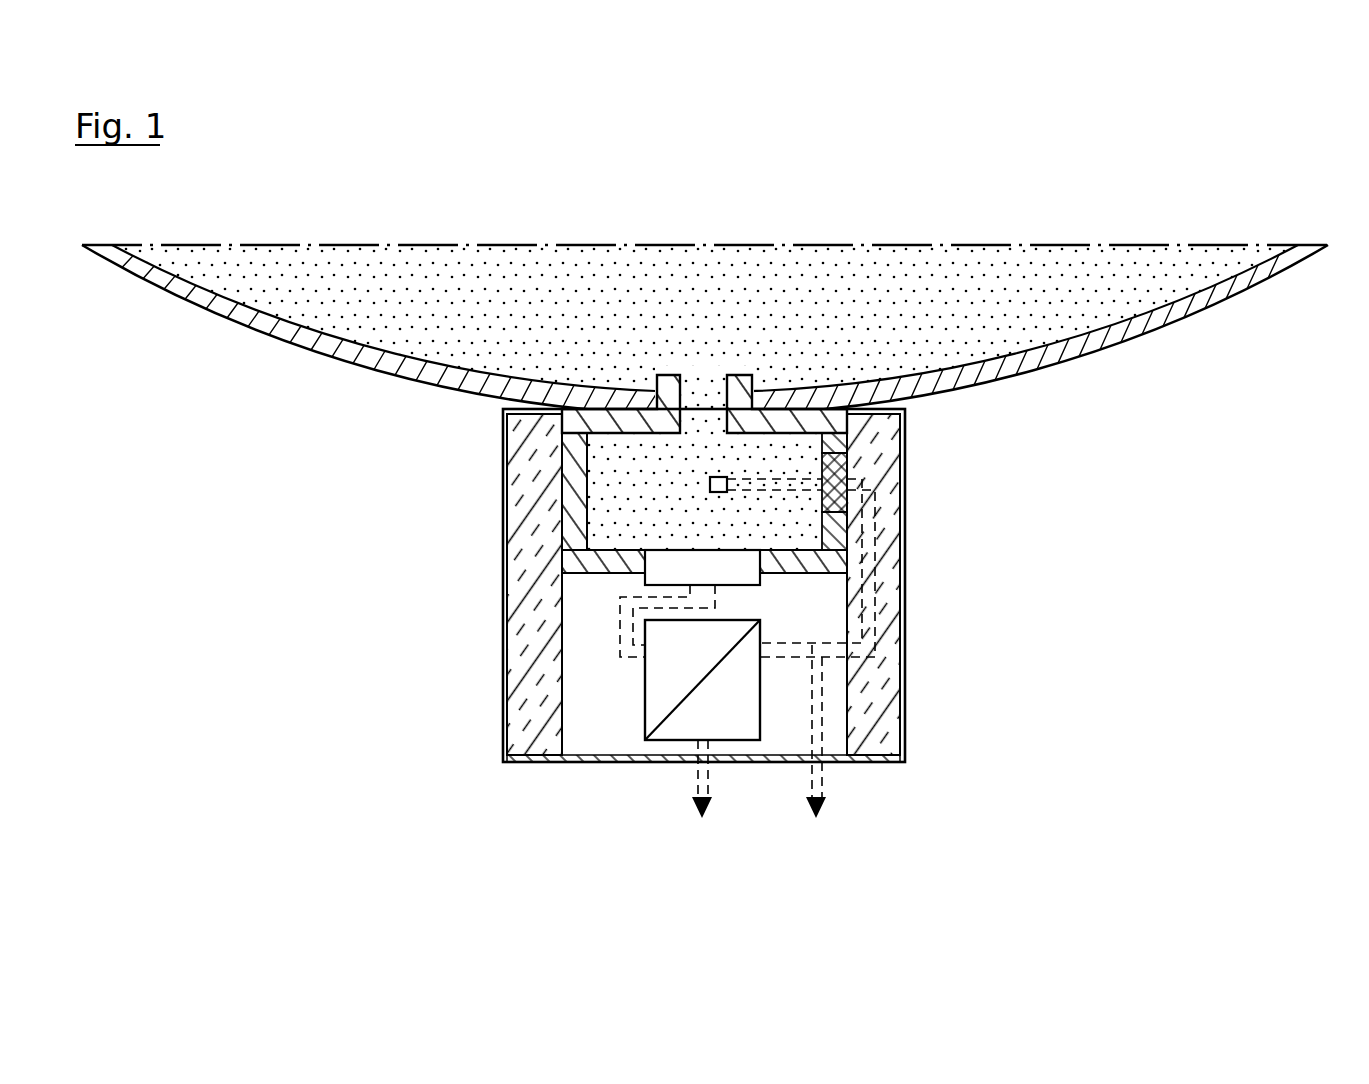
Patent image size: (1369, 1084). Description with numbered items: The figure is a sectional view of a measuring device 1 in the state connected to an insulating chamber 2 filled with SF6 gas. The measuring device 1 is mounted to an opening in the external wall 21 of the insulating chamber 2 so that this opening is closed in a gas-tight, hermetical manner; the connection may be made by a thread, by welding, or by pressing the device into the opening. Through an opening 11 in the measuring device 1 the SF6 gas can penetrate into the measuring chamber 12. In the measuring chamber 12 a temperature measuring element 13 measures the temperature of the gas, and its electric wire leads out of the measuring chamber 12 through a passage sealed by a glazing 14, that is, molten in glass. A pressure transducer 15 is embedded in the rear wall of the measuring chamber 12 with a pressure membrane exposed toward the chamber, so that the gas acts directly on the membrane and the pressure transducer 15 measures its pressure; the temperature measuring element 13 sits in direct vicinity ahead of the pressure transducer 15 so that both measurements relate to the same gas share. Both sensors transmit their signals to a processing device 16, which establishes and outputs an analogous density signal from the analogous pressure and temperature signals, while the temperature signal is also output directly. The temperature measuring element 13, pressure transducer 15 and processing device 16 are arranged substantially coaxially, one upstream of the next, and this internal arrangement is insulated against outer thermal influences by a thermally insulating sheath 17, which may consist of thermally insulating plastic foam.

The measuring device 1 is at (709, 531).
The insulating chamber 2 is at (773, 265).
The opening 11 is at (725, 403).
The measuring chamber 12 is at (613, 503).
The temperature measuring element 13 is at (723, 480).
The glazing 14 is at (838, 503).
The pressure transducer 15 is at (665, 568).
The processing device 16 is at (727, 680).
The thermally insulating sheath 17 is at (523, 474).
The external wall 21 is at (328, 345).